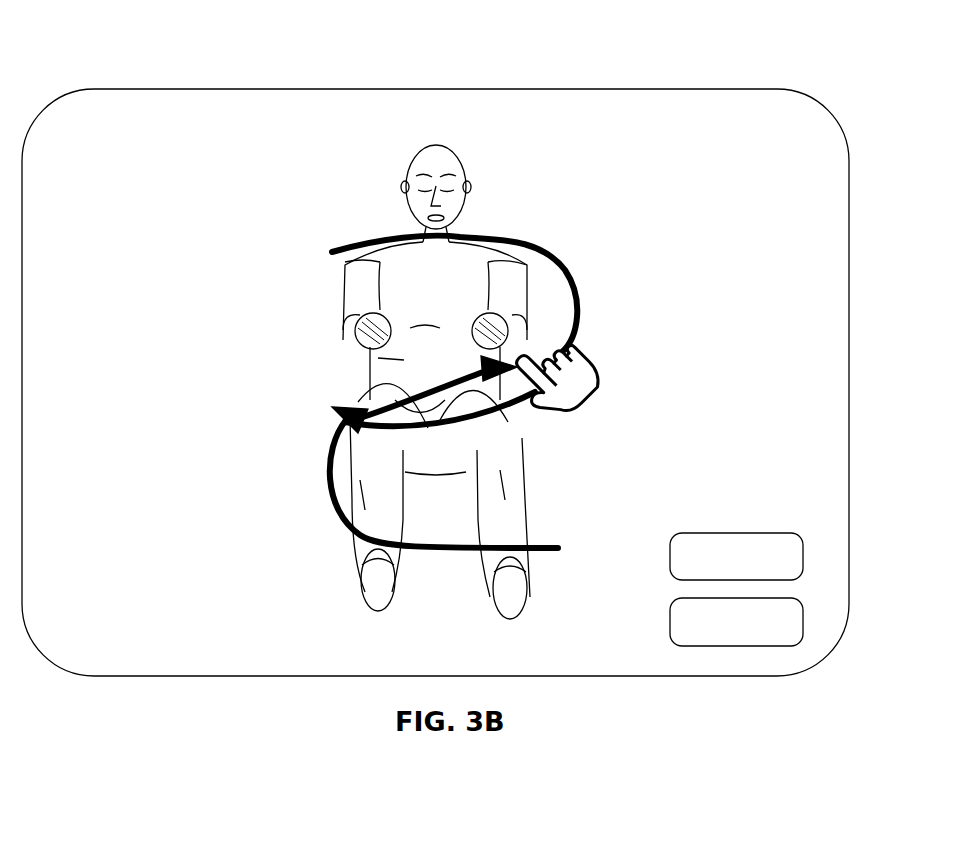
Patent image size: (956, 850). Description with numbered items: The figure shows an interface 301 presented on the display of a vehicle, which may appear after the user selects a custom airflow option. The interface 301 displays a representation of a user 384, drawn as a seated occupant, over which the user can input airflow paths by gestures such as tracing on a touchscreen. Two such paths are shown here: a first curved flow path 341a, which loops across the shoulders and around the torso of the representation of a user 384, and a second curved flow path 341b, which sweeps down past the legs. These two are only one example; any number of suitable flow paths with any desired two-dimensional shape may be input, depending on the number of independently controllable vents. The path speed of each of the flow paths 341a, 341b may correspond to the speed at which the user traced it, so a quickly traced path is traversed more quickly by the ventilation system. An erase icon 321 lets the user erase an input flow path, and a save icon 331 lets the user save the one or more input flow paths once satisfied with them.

The interface 301 is at (130, 92).
The representation of a user 384 is at (405, 175).
The first curved flow path 341a is at (425, 334).
The second curved flow path 341b is at (471, 491).
The erase icon 321 is at (670, 553).
The save icon 331 is at (670, 628).